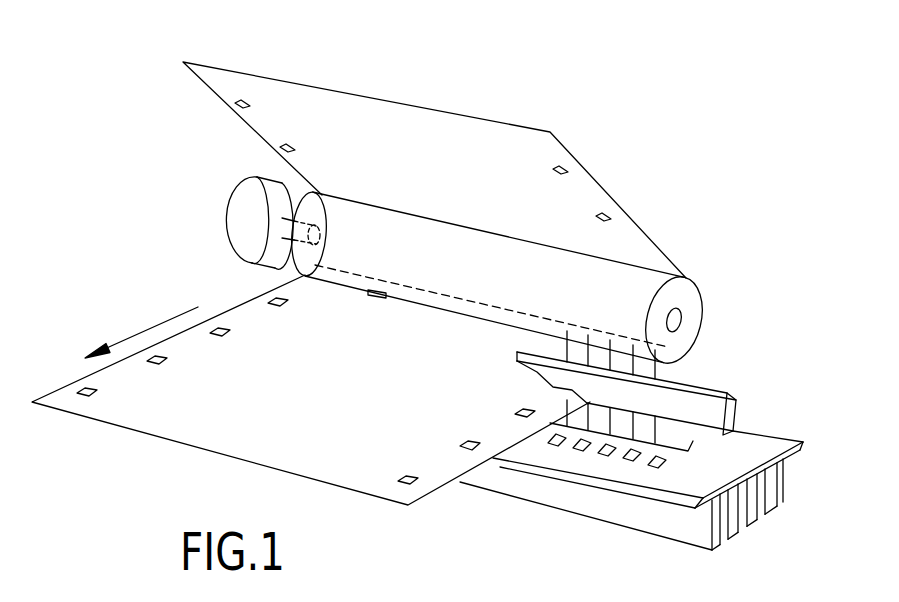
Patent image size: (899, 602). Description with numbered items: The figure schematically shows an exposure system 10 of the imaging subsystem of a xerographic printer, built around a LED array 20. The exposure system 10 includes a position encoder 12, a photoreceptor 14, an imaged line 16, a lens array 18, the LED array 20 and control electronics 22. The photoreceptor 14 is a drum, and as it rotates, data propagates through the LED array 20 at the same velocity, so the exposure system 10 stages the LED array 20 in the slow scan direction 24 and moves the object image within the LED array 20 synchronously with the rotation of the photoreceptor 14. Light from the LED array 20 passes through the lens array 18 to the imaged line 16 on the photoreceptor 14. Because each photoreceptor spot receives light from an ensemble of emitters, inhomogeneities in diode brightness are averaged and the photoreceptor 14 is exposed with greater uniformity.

The exposure system 10 is at (597, 105).
The position encoder 12 is at (233, 215).
The photoreceptor 14 is at (375, 240).
The imaged line 16 is at (383, 290).
The lens array 18 is at (730, 412).
The LED array 20 is at (691, 453).
The control electronics 22 is at (650, 466).
The slow scan direction 24 is at (147, 332).